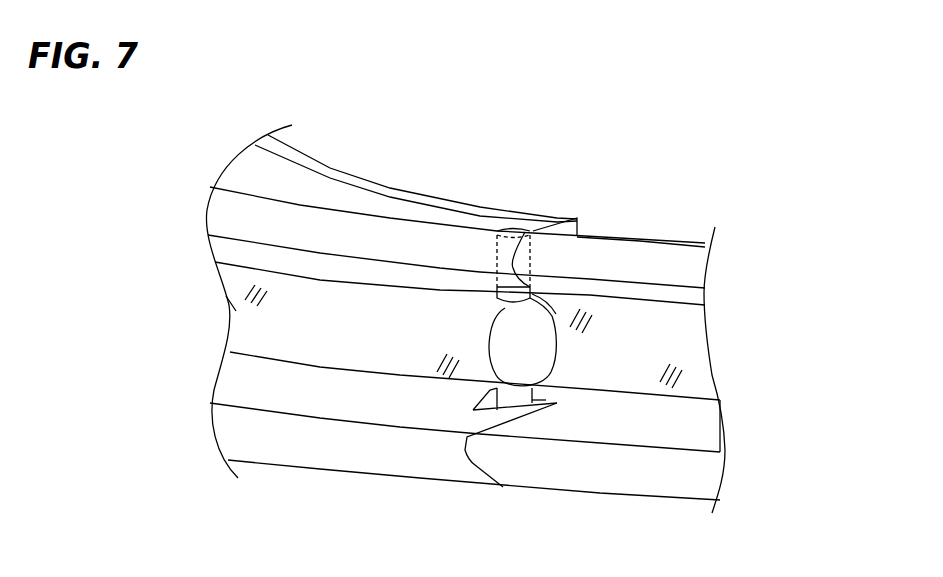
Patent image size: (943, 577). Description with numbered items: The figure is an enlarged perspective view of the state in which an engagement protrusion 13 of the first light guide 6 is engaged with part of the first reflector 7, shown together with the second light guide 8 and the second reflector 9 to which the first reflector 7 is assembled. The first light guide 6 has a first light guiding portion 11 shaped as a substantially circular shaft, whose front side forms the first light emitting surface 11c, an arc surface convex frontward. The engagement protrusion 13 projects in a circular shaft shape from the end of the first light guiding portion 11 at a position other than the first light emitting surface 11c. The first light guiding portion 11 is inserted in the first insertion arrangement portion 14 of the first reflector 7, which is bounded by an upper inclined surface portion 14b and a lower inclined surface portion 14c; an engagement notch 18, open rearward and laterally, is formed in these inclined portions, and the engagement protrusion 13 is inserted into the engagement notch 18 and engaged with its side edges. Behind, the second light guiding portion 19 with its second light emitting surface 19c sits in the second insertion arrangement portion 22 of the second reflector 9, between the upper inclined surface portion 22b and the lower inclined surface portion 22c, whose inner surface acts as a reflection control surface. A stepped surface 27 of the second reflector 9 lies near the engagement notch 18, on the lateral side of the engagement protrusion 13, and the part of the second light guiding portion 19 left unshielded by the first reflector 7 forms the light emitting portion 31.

The first light guide 6 is at (227, 298).
The first reflector 7 is at (328, 170).
The second light guide 8 is at (698, 345).
The second reflector 9 is at (638, 237).
The first light guiding portion 11 is at (240, 332).
The first light emitting surface 11c is at (362, 343).
The engagement protrusion 13 is at (500, 230).
The first insertion arrangement portion 14 is at (235, 367).
The upper inclined surface portion 14b is at (227, 247).
The lower inclined surface portion 14c is at (238, 392).
The engagement notch 18 is at (486, 396).
The second light guiding portion 19 is at (703, 360).
The second light emitting surface 19c is at (698, 383).
The second insertion arrangement portion 22 is at (708, 420).
The upper inclined surface portion 22b is at (698, 297).
The lower inclined surface portion 22c is at (715, 437).
The stepped surface 27 is at (533, 231).
The light emitting portion 31 is at (687, 325).